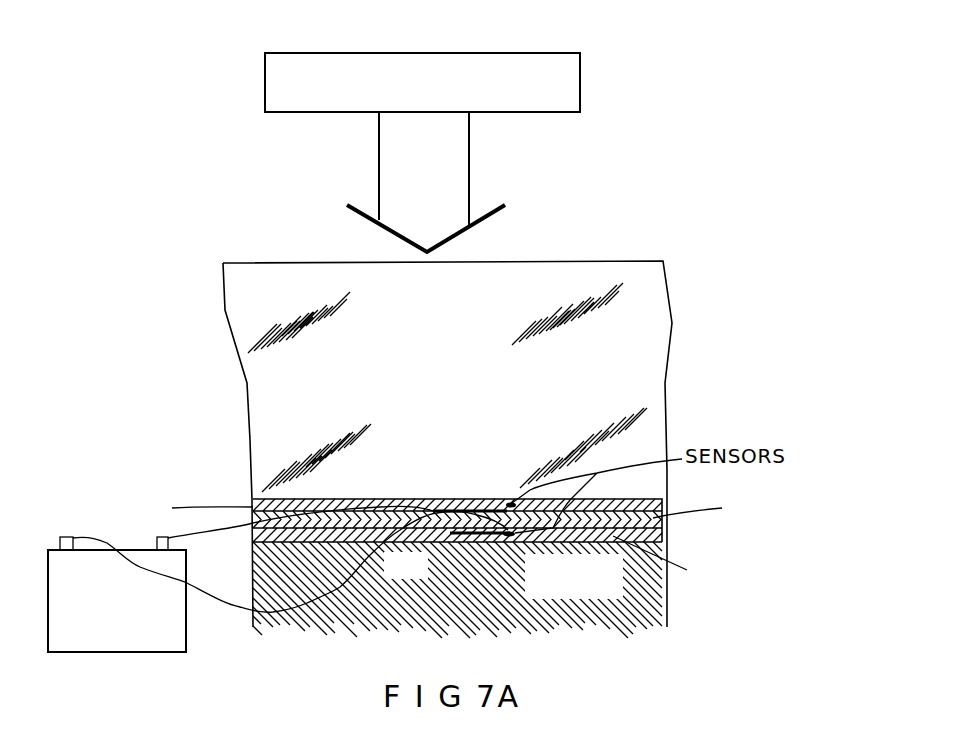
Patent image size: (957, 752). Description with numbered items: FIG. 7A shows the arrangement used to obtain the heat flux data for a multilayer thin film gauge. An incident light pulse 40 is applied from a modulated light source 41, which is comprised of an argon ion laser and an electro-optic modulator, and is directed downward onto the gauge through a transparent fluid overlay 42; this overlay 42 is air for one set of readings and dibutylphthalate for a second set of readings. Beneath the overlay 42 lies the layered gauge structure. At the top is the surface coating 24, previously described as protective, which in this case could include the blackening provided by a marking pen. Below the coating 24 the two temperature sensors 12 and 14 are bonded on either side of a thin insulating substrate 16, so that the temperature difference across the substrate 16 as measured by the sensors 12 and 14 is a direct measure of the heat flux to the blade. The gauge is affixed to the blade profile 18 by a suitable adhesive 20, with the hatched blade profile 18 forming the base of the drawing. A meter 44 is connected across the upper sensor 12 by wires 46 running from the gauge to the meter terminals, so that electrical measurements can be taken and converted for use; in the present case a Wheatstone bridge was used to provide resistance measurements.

The modulated light source 41 is at (558, 53).
The incident light pulse 40 is at (470, 187).
The transparent fluid overlay 42 is at (660, 326).
The surface coating 24 is at (270, 505).
The temperature sensor 12 is at (445, 508).
The insulating substrate 16 is at (662, 512).
The adhesive 20 is at (653, 537).
The temperature sensor 14 is at (440, 541).
The wires 46 is at (227, 601).
The meter 44 is at (168, 630).
The blade surface 18 is at (355, 607).